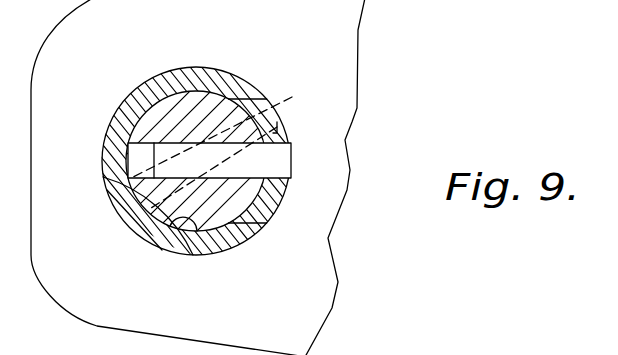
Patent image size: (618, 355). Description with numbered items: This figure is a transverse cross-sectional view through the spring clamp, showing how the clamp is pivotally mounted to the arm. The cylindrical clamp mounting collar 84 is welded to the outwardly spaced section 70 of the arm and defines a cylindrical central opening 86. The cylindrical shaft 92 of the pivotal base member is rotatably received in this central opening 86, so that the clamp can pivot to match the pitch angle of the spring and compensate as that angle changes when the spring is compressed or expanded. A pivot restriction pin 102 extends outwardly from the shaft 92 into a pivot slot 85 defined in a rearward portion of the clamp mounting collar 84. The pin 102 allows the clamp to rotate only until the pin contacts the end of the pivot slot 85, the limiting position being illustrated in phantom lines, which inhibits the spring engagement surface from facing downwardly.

The outwardly spaced section 70 is at (110, 298).
The clamp mounting collar 84 is at (188, 75).
The pivot slot 85 is at (267, 202).
The central opening 86 is at (175, 220).
The cylindrical shaft 92 is at (170, 122).
The pivot restriction pin 102 is at (300, 97).